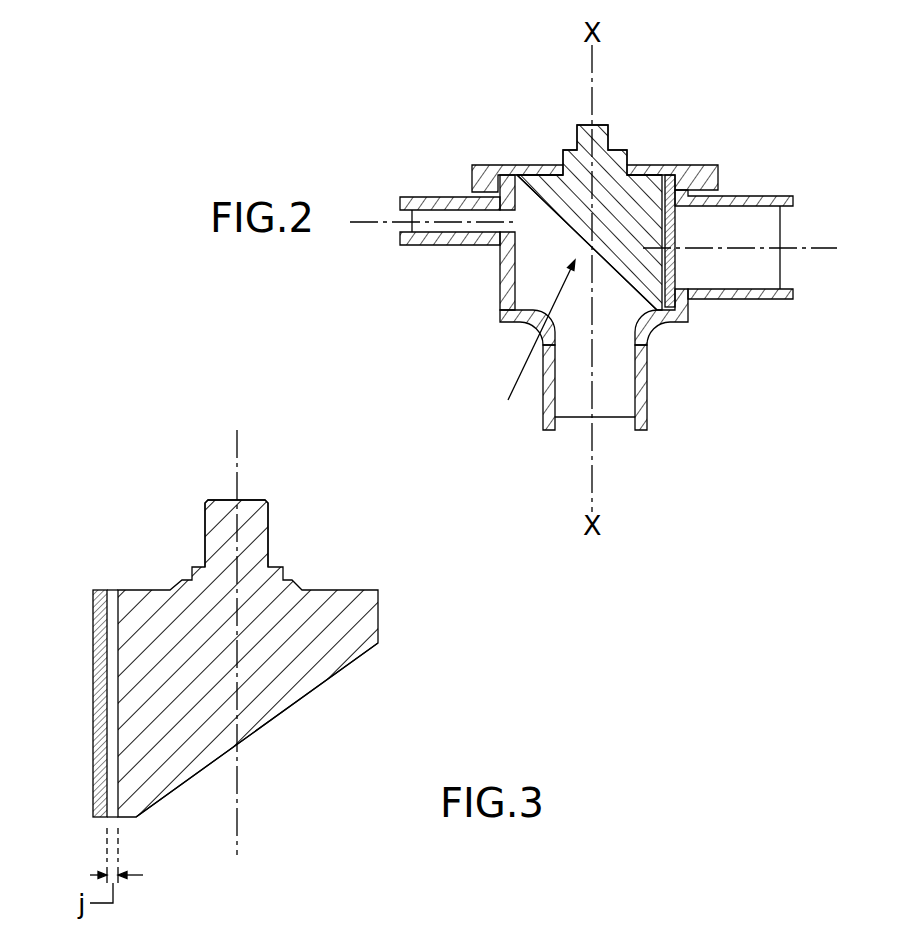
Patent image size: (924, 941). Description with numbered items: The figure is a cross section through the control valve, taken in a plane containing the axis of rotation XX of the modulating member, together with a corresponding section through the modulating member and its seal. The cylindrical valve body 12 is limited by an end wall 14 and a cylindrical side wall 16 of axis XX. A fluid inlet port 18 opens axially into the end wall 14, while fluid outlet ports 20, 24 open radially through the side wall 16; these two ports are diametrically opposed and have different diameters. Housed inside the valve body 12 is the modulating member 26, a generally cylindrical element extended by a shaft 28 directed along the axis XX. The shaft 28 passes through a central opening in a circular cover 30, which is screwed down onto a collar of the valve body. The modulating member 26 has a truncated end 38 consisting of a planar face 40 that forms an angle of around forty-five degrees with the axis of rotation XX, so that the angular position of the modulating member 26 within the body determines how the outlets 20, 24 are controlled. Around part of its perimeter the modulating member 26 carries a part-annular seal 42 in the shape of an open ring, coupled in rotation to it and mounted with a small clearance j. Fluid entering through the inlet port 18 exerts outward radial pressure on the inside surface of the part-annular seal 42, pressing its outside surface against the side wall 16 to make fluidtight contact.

In FIG. 2, the valve body 12 is at (491, 294).
In FIG. 2, the end wall 14 is at (524, 331).
In FIG. 2, the cylindrical side wall 16 is at (499, 264).
In FIG. 2, the fluid inlet port 18 is at (649, 373).
In FIG. 2, the fluid outlet port 20 is at (762, 196).
In FIG. 2, the fluid outlet port 24 is at (437, 197).
In FIG. 2, the modulating member 26 is at (591, 244).
In FIG. 3, the modulating member 26 is at (234, 637).
In FIG. 2, the shaft 28 is at (588, 126).
In FIG. 3, the shaft 28 is at (251, 500).
In FIG. 2, the circular cover 30 is at (696, 164).
In FIG. 2, the truncated end 38 is at (522, 338).
In FIG. 2, the planar face 40 is at (644, 323).
In FIG. 3, the planar face 40 is at (273, 722).
In FIG. 2, the part-annular seal 42 is at (684, 271).
In FIG. 3, the part-annular seal 42 is at (83, 712).